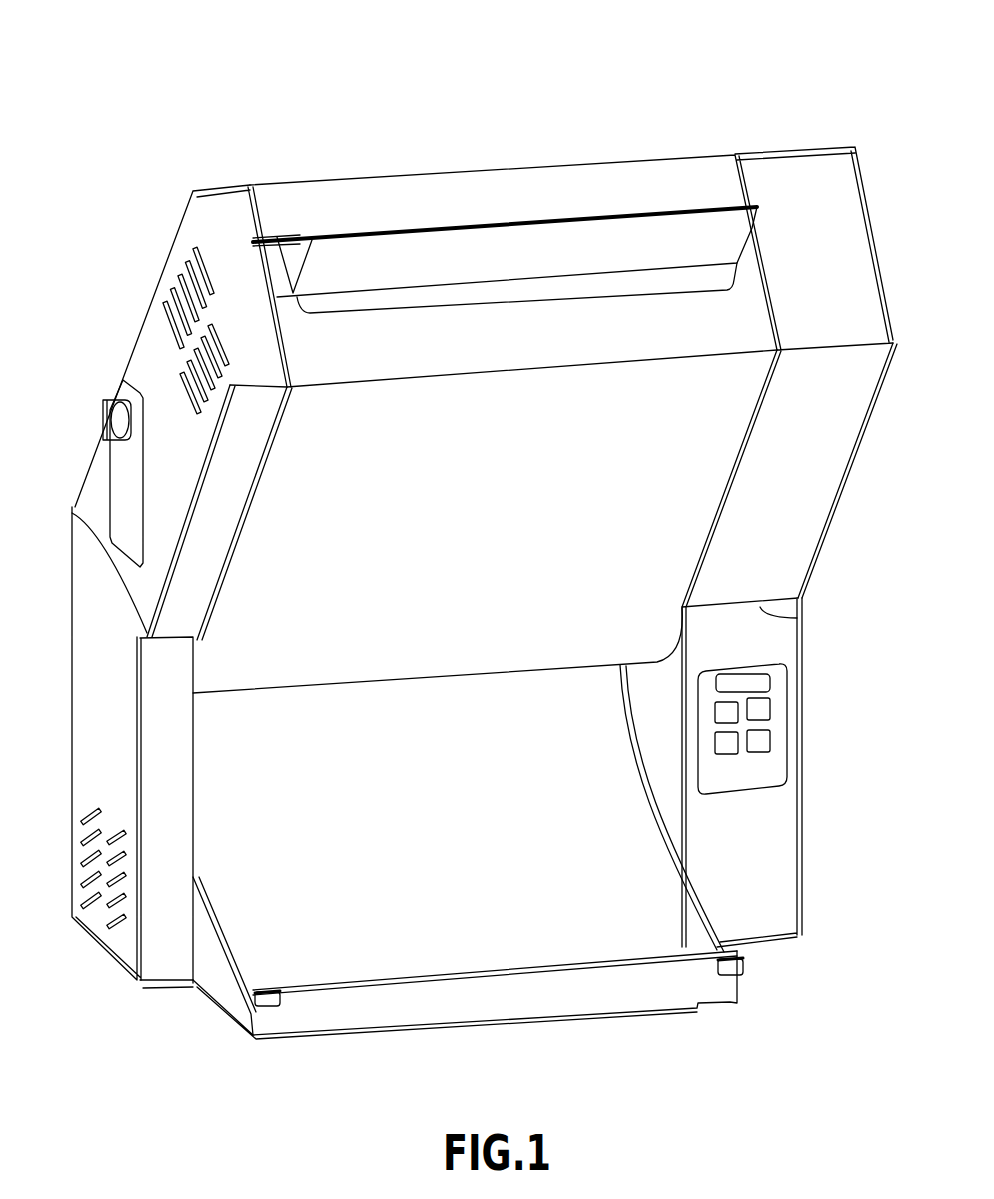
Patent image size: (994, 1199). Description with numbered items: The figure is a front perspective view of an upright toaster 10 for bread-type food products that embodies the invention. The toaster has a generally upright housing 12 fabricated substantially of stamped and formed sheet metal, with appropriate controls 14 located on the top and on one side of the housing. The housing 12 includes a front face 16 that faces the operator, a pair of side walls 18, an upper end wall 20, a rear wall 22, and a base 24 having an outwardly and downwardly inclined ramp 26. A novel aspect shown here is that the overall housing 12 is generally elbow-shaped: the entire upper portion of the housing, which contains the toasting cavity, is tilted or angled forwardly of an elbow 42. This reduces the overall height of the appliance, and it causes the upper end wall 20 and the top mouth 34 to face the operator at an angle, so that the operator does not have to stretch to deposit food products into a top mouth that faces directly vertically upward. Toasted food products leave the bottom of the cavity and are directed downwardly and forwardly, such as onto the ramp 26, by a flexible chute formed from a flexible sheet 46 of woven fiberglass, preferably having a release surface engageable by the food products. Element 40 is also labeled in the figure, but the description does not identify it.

The toaster 10 is at (272, 98).
The housing 12 is at (147, 348).
The controls 14 is at (108, 400).
The front face 16 is at (497, 513).
The side walls 18 is at (93, 625).
The upper end wall 20 is at (437, 183).
The rear wall 22 is at (168, 247).
The base 24 is at (227, 1013).
The ramp 26 is at (212, 942).
The top mouth 34 is at (347, 238).
The handle face 40 is at (520, 243).
The elbow 42 is at (73, 517).
The flexible sheet 46 is at (416, 807).